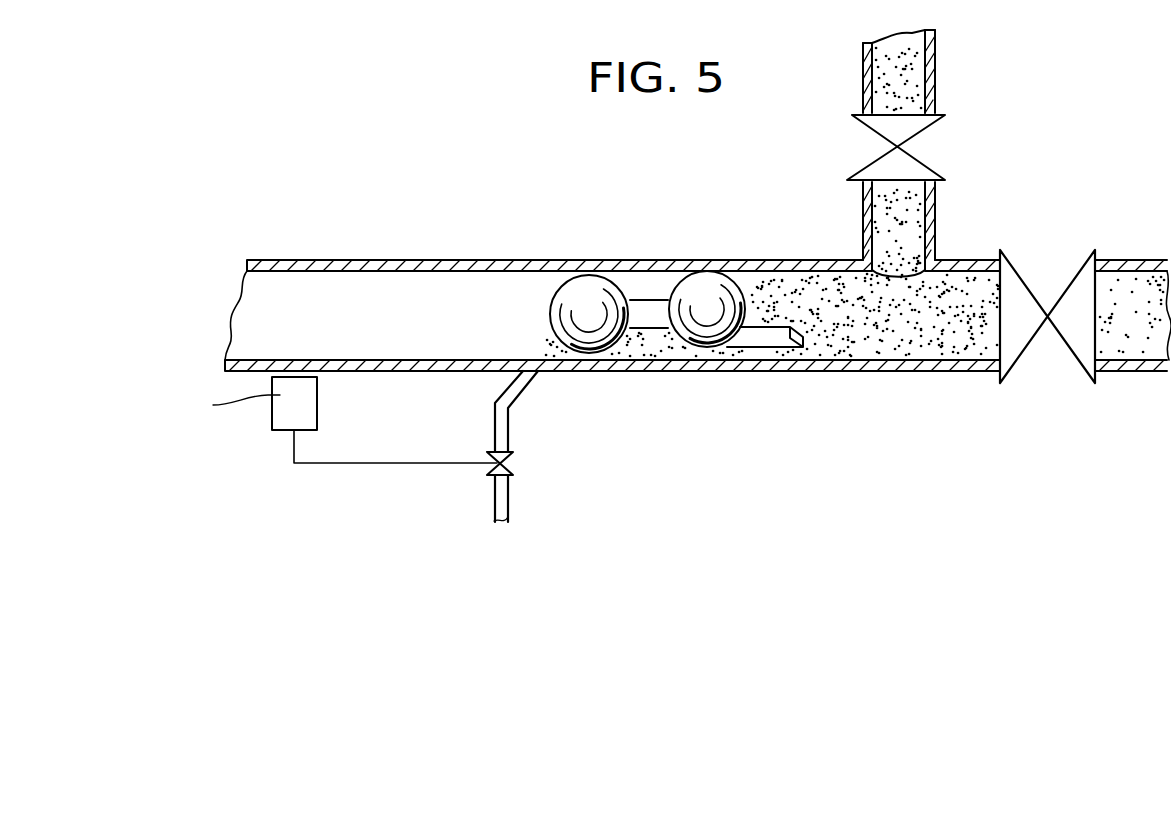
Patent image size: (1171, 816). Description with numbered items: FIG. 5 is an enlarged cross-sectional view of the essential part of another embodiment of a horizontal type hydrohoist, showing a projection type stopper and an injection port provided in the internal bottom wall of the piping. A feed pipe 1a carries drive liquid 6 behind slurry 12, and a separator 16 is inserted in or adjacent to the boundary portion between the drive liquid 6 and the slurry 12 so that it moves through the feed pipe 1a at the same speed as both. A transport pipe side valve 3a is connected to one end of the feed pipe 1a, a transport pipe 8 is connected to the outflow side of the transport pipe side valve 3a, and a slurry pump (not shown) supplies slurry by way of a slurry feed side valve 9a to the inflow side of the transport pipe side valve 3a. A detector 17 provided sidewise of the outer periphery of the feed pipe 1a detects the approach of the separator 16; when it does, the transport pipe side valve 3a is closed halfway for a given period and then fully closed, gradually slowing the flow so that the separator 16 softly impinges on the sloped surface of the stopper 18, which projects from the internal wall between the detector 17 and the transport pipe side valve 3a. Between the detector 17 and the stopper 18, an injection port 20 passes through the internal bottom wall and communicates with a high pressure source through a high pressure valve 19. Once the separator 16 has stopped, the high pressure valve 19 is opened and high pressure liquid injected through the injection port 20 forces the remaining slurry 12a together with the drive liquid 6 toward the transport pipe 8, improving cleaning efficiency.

The feed pipe 1a is at (478, 263).
The drive liquid 6 is at (612, 293).
The separator 16 is at (650, 302).
The remaining slurry 12a is at (587, 357).
The stopper 18 is at (755, 347).
The slurry 12 is at (880, 336).
The slurry feed side valve 9a is at (870, 172).
The transport pipe side valve 3a is at (1075, 278).
The transport pipe 8 is at (1137, 245).
The detector 17 is at (310, 410).
The high pressure valve 19 is at (482, 465).
The injection port 20 is at (540, 358).